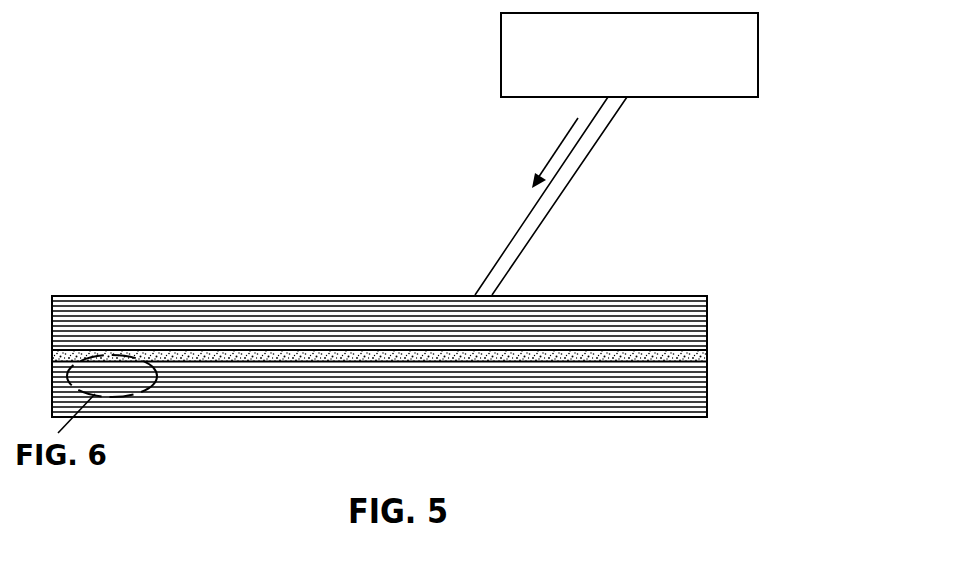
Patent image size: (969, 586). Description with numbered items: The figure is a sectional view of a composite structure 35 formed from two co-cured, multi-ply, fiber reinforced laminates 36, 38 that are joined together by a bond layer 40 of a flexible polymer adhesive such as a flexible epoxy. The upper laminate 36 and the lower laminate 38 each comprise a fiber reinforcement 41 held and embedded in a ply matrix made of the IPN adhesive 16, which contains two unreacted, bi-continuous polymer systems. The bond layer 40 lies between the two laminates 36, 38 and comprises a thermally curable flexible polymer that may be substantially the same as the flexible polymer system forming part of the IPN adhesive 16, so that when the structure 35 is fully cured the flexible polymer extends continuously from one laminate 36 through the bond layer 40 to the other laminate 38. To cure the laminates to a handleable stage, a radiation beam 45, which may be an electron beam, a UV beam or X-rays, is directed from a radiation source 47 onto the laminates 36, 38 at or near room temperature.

The composite structure 35 is at (118, 266).
The first laminate 36 is at (236, 317).
The second laminate 38 is at (171, 402).
The bond layer 40 is at (563, 353).
The IPN adhesive 16 is at (357, 317).
The fiber reinforcement 41 is at (417, 327).
The radiation beam 45 is at (557, 196).
The radiation source 47 is at (758, 50).